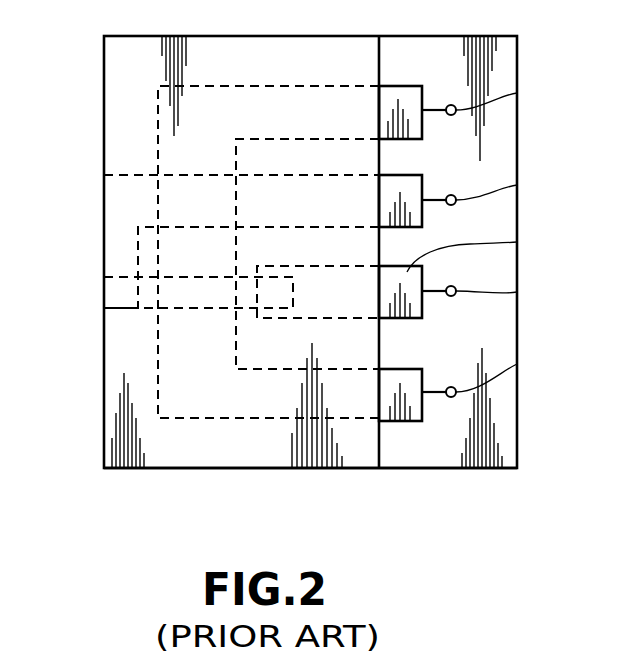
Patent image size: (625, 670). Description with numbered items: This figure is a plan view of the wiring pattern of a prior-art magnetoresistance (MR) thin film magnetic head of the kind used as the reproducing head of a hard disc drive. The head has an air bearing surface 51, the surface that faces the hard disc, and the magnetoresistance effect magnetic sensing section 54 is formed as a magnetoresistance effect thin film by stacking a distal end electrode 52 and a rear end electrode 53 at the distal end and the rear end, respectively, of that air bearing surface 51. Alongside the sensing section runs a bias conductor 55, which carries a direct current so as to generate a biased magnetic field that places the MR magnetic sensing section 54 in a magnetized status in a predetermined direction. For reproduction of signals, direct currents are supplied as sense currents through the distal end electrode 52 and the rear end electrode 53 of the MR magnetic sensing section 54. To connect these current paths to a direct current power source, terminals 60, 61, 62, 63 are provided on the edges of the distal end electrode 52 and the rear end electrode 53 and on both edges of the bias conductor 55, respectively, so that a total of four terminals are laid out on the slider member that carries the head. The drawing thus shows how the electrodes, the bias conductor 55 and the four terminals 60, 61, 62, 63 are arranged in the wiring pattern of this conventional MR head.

The air bearing surface 51 is at (104, 410).
The distal end electrode 52 is at (128, 202).
The rear end electrode 53 is at (517, 242).
The magnetoresistance effect magnetic sensing section 54 is at (192, 298).
The bias conductor 55 is at (262, 405).
The terminal 60 is at (517, 185).
The terminal 61 is at (517, 292).
The terminal 62 is at (517, 93).
The terminal 63 is at (517, 364).